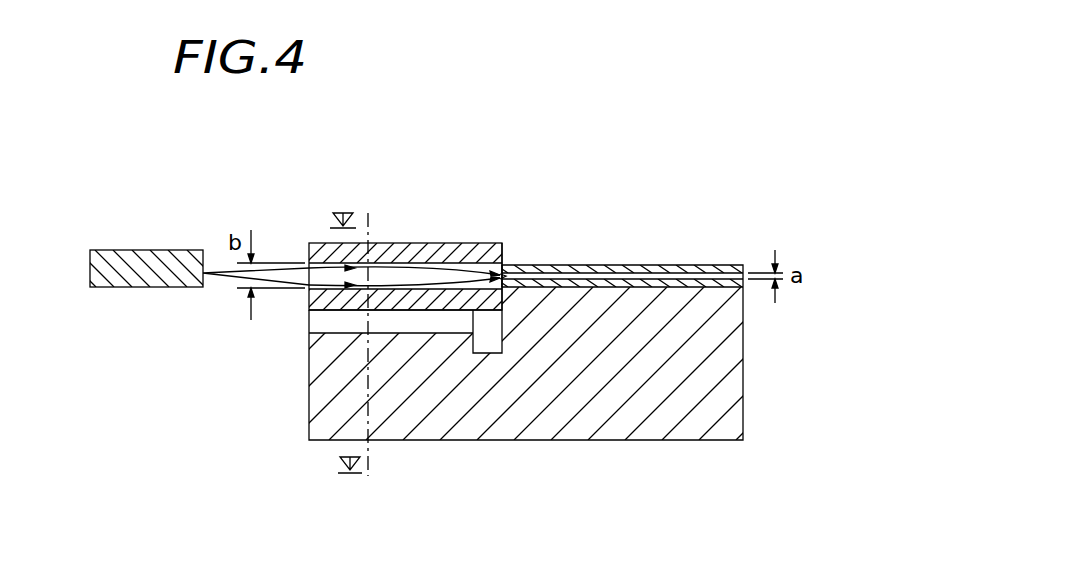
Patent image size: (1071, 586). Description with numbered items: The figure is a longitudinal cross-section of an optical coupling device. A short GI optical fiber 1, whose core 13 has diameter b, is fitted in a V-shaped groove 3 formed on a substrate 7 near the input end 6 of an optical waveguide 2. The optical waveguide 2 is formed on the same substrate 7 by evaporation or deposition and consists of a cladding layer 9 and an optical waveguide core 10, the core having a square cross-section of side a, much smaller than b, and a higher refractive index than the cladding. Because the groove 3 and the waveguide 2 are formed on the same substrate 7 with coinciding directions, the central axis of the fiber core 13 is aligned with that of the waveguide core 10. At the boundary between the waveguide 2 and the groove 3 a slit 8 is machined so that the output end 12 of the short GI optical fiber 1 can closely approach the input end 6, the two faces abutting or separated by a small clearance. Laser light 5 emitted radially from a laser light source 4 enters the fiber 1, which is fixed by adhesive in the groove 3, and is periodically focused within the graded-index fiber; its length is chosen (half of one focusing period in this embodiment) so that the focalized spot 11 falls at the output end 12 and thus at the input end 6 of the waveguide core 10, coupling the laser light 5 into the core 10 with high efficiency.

The short GI optical fiber 1 is at (375, 113).
The optical waveguide 2 is at (672, 113).
The V-shaped groove 3 is at (320, 323).
The laser light source 4 is at (131, 250).
The laser light 5 is at (274, 270).
The input end of the optical waveguide 6 is at (505, 280).
The substrate 7 is at (330, 412).
The slit 8 is at (485, 357).
The cladding layer 9 is at (734, 288).
The optical waveguide core 10 is at (682, 273).
The focalized spot 11 is at (508, 287).
The output end of the short GI optical fiber 12 is at (503, 268).
The core of the short GI optical fiber 13 is at (477, 263).